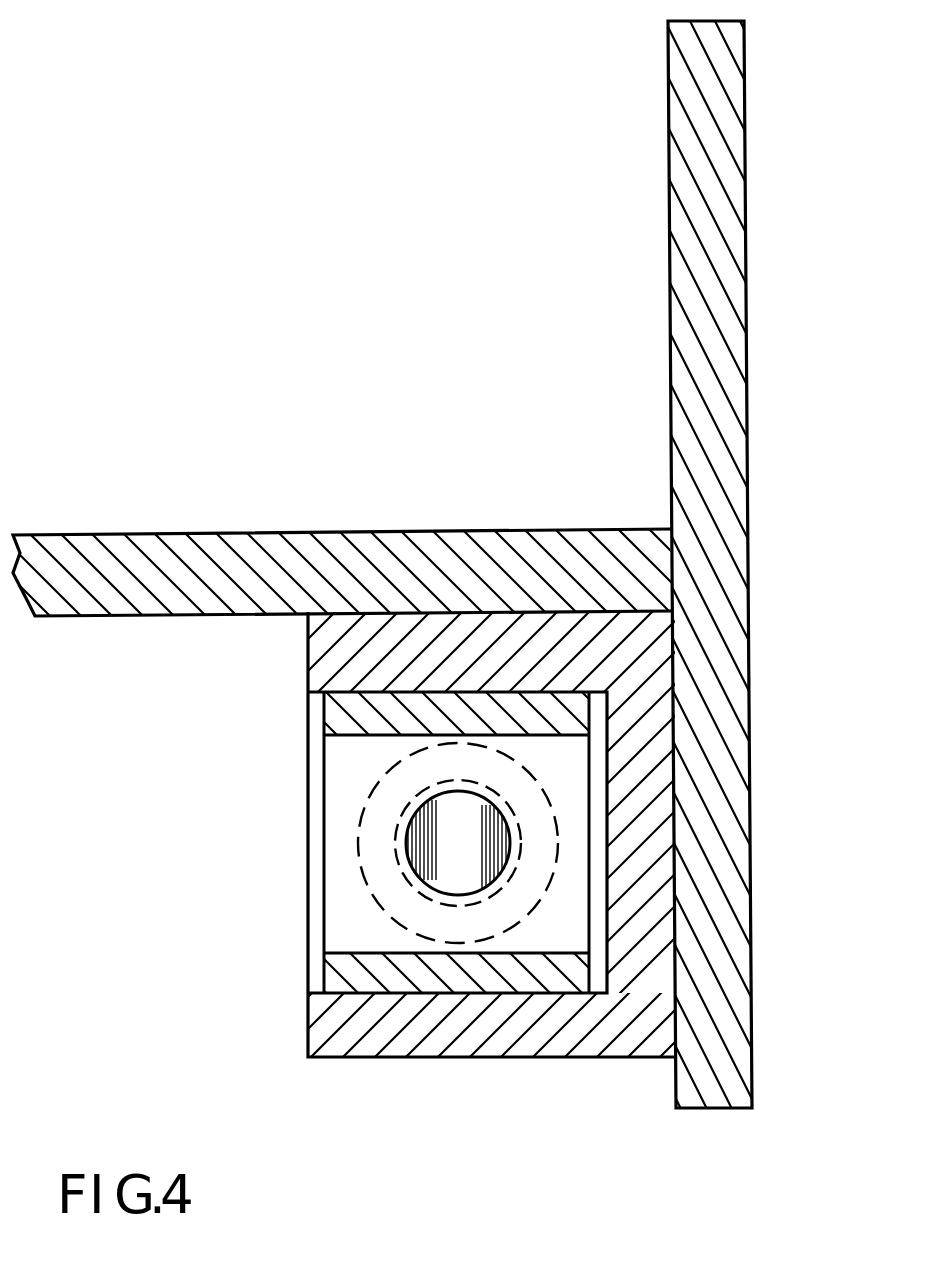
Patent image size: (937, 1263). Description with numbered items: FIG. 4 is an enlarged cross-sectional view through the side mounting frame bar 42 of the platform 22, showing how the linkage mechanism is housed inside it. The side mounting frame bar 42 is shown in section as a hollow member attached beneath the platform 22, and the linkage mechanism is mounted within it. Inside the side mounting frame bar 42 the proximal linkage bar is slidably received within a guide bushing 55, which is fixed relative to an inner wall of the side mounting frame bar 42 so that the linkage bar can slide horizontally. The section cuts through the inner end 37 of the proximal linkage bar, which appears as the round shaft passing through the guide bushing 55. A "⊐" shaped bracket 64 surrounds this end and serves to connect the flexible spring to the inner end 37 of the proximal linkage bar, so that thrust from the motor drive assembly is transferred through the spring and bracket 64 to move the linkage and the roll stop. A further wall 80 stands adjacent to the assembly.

The vertical wall 80 is at (722, 147).
The platform 22 is at (143, 557).
The side mounting frame bar 42 is at (550, 1025).
The ⊐ shaped bracket 64 is at (373, 972).
The guide bushing 55 is at (397, 795).
The inner end of proximal linkage bar 37 is at (437, 853).